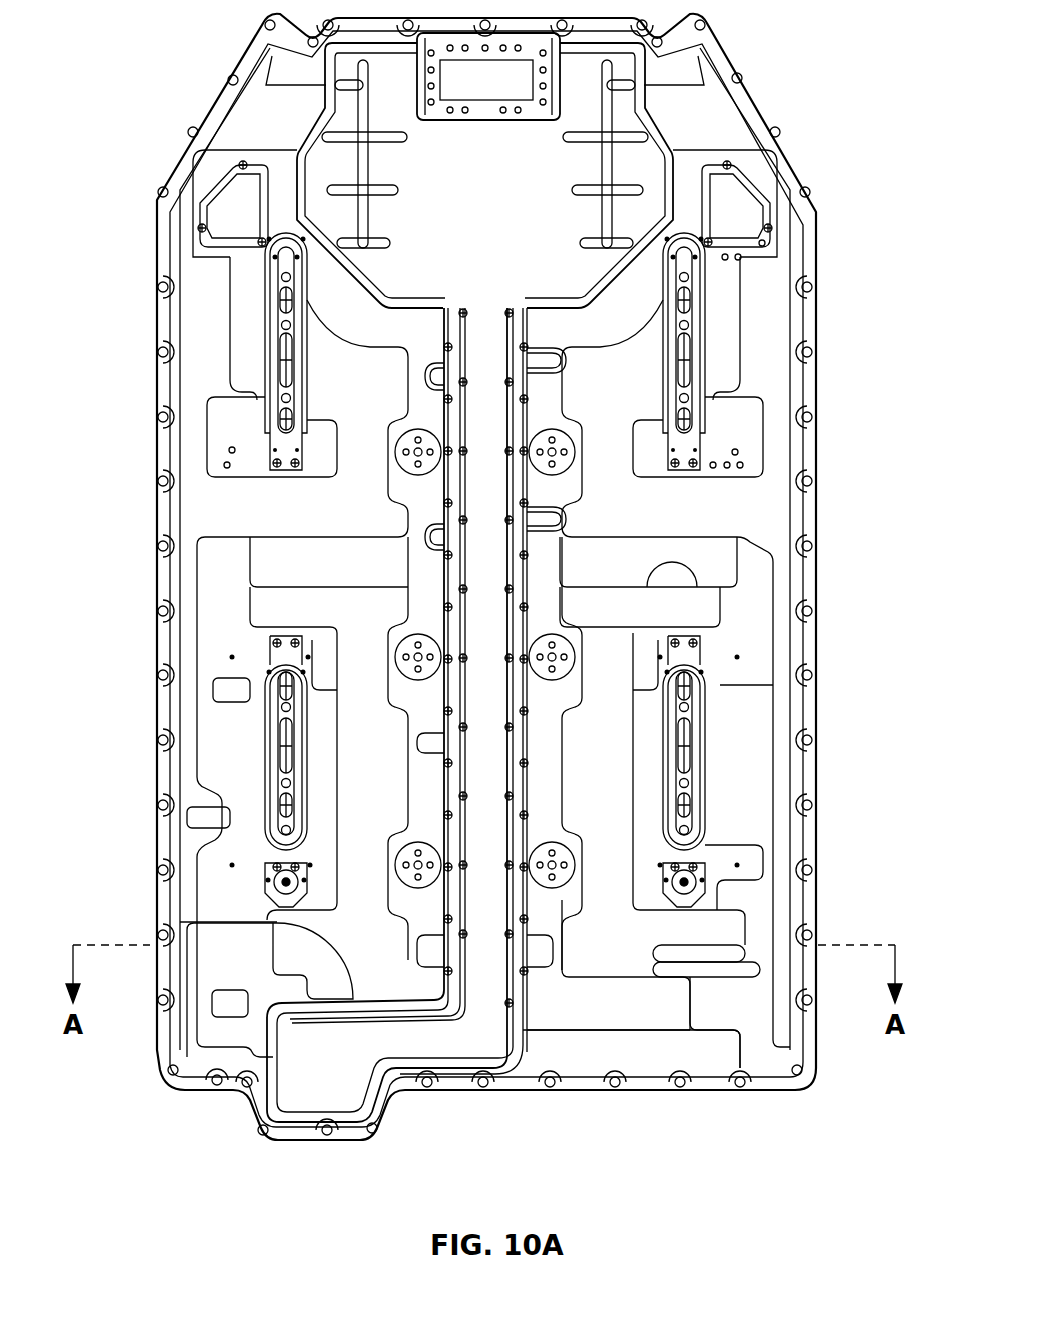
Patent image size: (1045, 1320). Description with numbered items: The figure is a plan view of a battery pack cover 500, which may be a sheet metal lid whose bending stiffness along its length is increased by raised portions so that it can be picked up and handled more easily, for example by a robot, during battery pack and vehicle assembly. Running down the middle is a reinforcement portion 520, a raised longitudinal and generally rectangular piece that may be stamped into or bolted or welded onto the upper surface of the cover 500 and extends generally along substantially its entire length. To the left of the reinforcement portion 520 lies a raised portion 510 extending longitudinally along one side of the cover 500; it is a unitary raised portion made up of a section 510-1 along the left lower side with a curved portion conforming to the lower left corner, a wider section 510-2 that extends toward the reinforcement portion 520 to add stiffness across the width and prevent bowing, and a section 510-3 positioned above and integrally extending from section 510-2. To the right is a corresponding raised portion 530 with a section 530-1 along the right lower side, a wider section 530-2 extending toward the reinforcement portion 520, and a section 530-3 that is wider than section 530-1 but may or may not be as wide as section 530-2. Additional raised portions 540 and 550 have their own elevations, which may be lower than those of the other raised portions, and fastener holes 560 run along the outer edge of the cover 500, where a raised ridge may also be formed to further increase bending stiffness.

The battery pack cover 500 is at (252, 40).
The raised portion 510 is at (190, 796).
The section 510-1 is at (200, 1052).
The section 510-2 is at (222, 497).
The section 510-3 is at (190, 344).
The reinforcement portion 520 is at (180, 922).
The raised portion 530 is at (797, 837).
The section 530-1 is at (795, 1048).
The section 530-2 is at (760, 485).
The section 530-3 is at (776, 297).
The raised portion 540 is at (337, 768).
The raised portion 550 is at (600, 663).
The fastener holes 560 is at (158, 675).